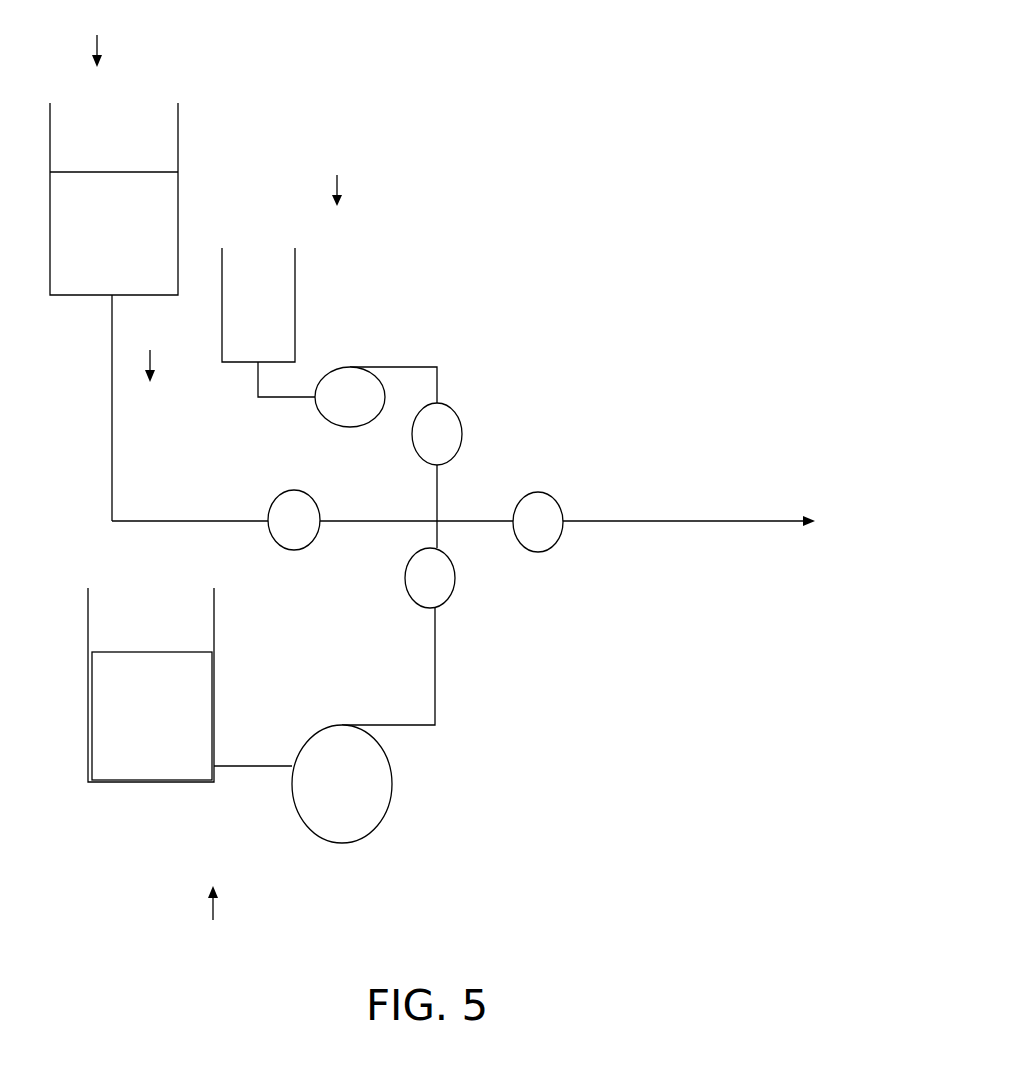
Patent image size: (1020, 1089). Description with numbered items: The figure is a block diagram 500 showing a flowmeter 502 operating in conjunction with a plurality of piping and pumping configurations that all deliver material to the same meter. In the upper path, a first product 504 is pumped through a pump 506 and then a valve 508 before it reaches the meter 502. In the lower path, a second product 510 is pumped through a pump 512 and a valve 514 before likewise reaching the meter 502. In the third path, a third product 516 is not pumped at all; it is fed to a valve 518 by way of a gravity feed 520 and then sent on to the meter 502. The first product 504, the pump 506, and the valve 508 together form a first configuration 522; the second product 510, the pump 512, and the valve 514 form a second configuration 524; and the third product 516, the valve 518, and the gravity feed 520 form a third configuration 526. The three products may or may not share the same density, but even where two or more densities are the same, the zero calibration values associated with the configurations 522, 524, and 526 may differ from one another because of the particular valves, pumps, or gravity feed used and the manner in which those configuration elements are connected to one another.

The block diagram 500 is at (603, 44).
The flowmeter 502 is at (560, 503).
The first product 504 is at (295, 305).
The pump 506 is at (334, 427).
The valve 508 is at (457, 418).
The second product 510 is at (148, 785).
The pump 512 is at (393, 782).
The valve 514 is at (418, 605).
The third product 516 is at (178, 215).
The valve 518 is at (298, 550).
The gravity feed 520 is at (149, 378).
The first configuration 522 is at (355, 173).
The second configuration 524 is at (230, 949).
The third configuration 526 is at (117, 33).